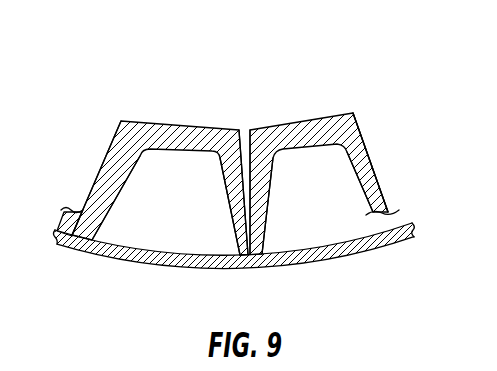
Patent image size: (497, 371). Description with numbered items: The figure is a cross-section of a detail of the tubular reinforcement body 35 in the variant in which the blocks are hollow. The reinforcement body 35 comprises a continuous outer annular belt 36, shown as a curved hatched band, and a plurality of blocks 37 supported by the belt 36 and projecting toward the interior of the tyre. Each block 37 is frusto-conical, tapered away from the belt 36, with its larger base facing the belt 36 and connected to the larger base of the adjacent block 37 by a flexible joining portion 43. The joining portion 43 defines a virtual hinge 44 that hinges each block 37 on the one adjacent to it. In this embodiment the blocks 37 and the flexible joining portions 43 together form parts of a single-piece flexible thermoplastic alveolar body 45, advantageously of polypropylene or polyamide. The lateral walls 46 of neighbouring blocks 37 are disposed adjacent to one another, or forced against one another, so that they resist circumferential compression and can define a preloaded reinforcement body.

The tubular reinforcement body 35 is at (254, 194).
The continuous outer annular belt 36 is at (122, 258).
The blocks 37 is at (185, 125).
The flexible joining portion 43 is at (255, 260).
The virtual hinge 44 is at (235, 248).
The flexible thermoplastic material alveolar body 45 is at (383, 168).
The lateral walls 46 is at (105, 155).